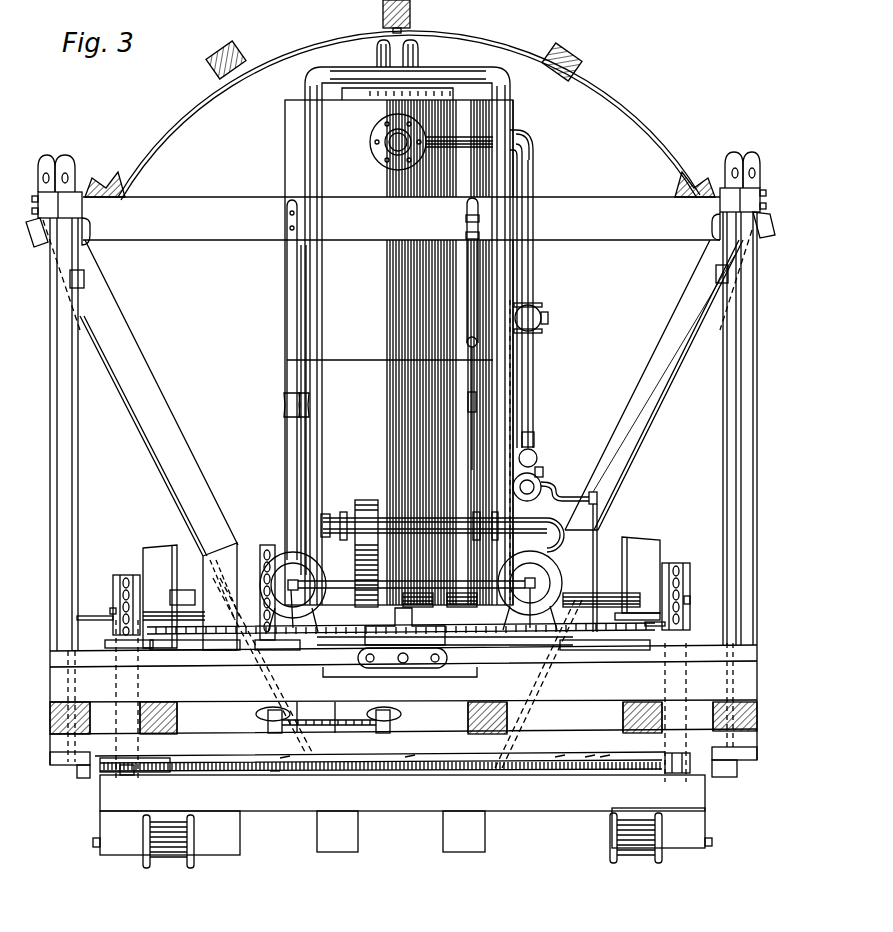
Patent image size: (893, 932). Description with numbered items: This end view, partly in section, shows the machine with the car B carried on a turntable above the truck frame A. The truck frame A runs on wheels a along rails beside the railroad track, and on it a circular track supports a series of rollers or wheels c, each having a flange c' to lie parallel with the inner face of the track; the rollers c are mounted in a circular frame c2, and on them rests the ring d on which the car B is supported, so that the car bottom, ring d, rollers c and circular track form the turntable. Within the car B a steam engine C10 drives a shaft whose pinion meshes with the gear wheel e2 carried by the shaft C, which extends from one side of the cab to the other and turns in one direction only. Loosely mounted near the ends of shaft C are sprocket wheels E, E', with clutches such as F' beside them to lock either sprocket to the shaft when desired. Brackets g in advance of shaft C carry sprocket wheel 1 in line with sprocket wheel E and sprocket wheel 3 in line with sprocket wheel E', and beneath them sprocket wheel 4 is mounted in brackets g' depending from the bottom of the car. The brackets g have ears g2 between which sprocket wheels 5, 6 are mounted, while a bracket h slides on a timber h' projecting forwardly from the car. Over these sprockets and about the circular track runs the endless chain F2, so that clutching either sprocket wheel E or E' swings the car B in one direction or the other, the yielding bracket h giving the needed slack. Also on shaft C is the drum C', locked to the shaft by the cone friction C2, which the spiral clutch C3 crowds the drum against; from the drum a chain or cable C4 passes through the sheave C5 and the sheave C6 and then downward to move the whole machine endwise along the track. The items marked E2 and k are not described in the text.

The car B is at (237, 491).
The gear wheel e2 is at (364, 500).
The drum C' is at (260, 581).
The cone friction C2 is at (233, 580).
The steam engine C10 is at (292, 560).
The shaft C is at (601, 568).
The clutch F' is at (160, 585).
The sprocket wheel E' is at (129, 602).
The sprocket wheel E is at (652, 575).
The sprocket wheel 3 is at (113, 610).
The ears g2 is at (172, 598).
The spiral clutch C3 is at (205, 615).
The bracket g is at (393, 626).
The sprocket wheel 1 is at (692, 600).
The sprocket wheel 5 is at (190, 645).
The sprocket wheel 6 is at (640, 645).
The chain or cable C4 is at (264, 644).
The chain rail E2 is at (505, 634).
The endless chain F2 is at (228, 660).
The bracket h is at (405, 626).
The timber h' is at (400, 670).
The sheave C5 is at (256, 715).
The sheave C6 is at (400, 715).
The wheels a is at (205, 760).
The flange c' is at (422, 748).
The rollers or wheels c is at (507, 747).
The ring d is at (558, 758).
The circular frame c2 is at (276, 771).
The truck frame A is at (402, 813).
The sprocket wheel 4 is at (124, 776).
The brackets g' is at (410, 784).
The block k is at (668, 773).